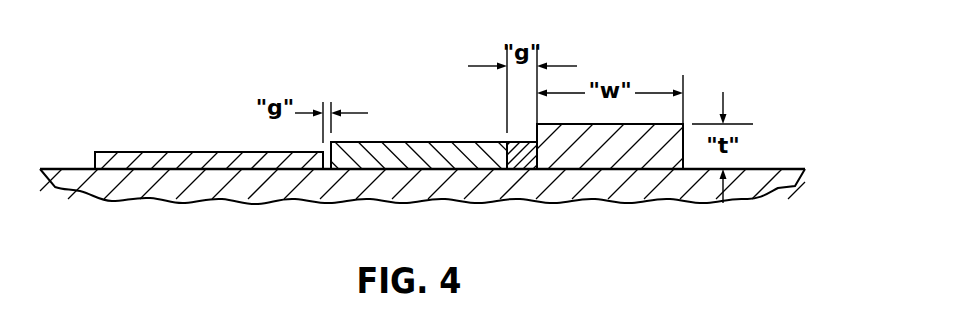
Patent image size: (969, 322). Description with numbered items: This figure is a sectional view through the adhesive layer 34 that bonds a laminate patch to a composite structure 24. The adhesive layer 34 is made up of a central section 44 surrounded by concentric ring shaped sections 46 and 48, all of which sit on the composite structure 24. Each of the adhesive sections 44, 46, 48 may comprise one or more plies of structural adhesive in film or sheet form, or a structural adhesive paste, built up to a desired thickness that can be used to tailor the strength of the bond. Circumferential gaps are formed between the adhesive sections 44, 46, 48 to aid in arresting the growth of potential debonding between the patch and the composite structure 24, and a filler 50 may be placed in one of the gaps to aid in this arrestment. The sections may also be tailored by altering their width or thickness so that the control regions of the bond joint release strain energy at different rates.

The adhesive layer 34 is at (108, 108).
The composite structure 24 is at (105, 182).
The central section 44 is at (196, 163).
The ring shaped section 46 is at (417, 155).
The ring shaped section 48 is at (610, 145).
The filler 50 is at (523, 152).